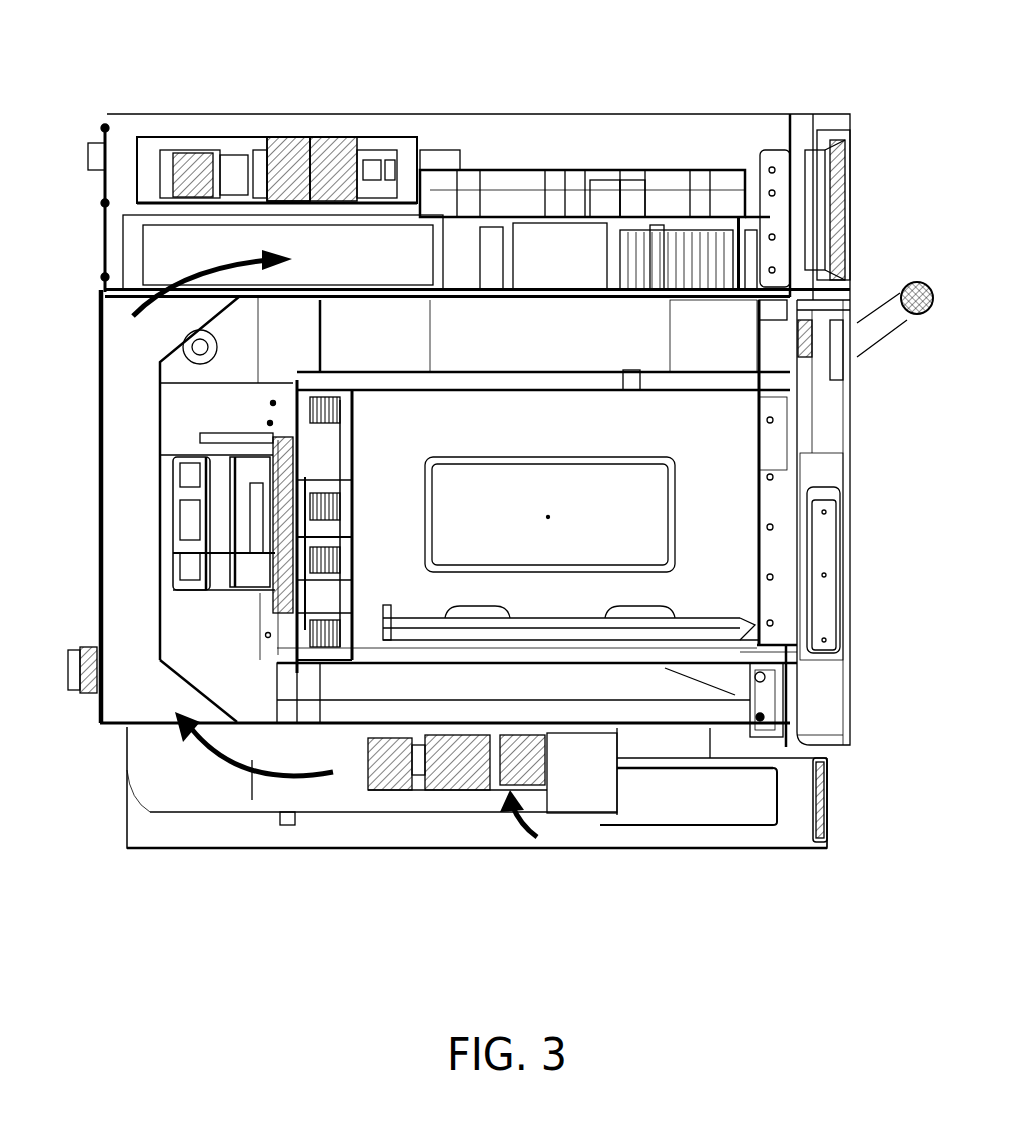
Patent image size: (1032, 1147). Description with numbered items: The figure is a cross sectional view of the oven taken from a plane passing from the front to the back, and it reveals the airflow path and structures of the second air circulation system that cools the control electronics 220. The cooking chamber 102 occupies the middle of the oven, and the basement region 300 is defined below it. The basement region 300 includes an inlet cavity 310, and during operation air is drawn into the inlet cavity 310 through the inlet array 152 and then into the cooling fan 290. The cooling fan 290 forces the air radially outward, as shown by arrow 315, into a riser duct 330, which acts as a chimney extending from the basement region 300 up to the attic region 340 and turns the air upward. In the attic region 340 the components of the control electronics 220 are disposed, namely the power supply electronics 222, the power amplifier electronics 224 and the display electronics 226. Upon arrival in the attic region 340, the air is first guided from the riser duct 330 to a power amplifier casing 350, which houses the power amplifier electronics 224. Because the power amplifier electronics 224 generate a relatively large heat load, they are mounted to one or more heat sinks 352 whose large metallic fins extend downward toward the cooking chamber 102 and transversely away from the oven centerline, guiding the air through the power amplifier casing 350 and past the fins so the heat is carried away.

The cooking chamber 102 is at (689, 444).
The inlet array 152 is at (700, 797).
The control electronics 220 is at (478, 182).
The power supply electronics 222 is at (292, 162).
The power amplifier electronics 224 is at (629, 183).
The display electronics 226 is at (811, 175).
The cooling fan 290 is at (456, 785).
The basement region 300 is at (850, 753).
The inlet cavity 310 is at (226, 826).
The arrow 315 is at (252, 760).
The riser duct 330 is at (132, 555).
The attic region 340 is at (434, 153).
The power amplifier casing 350 is at (606, 190).
The heat sinks 352 is at (657, 270).